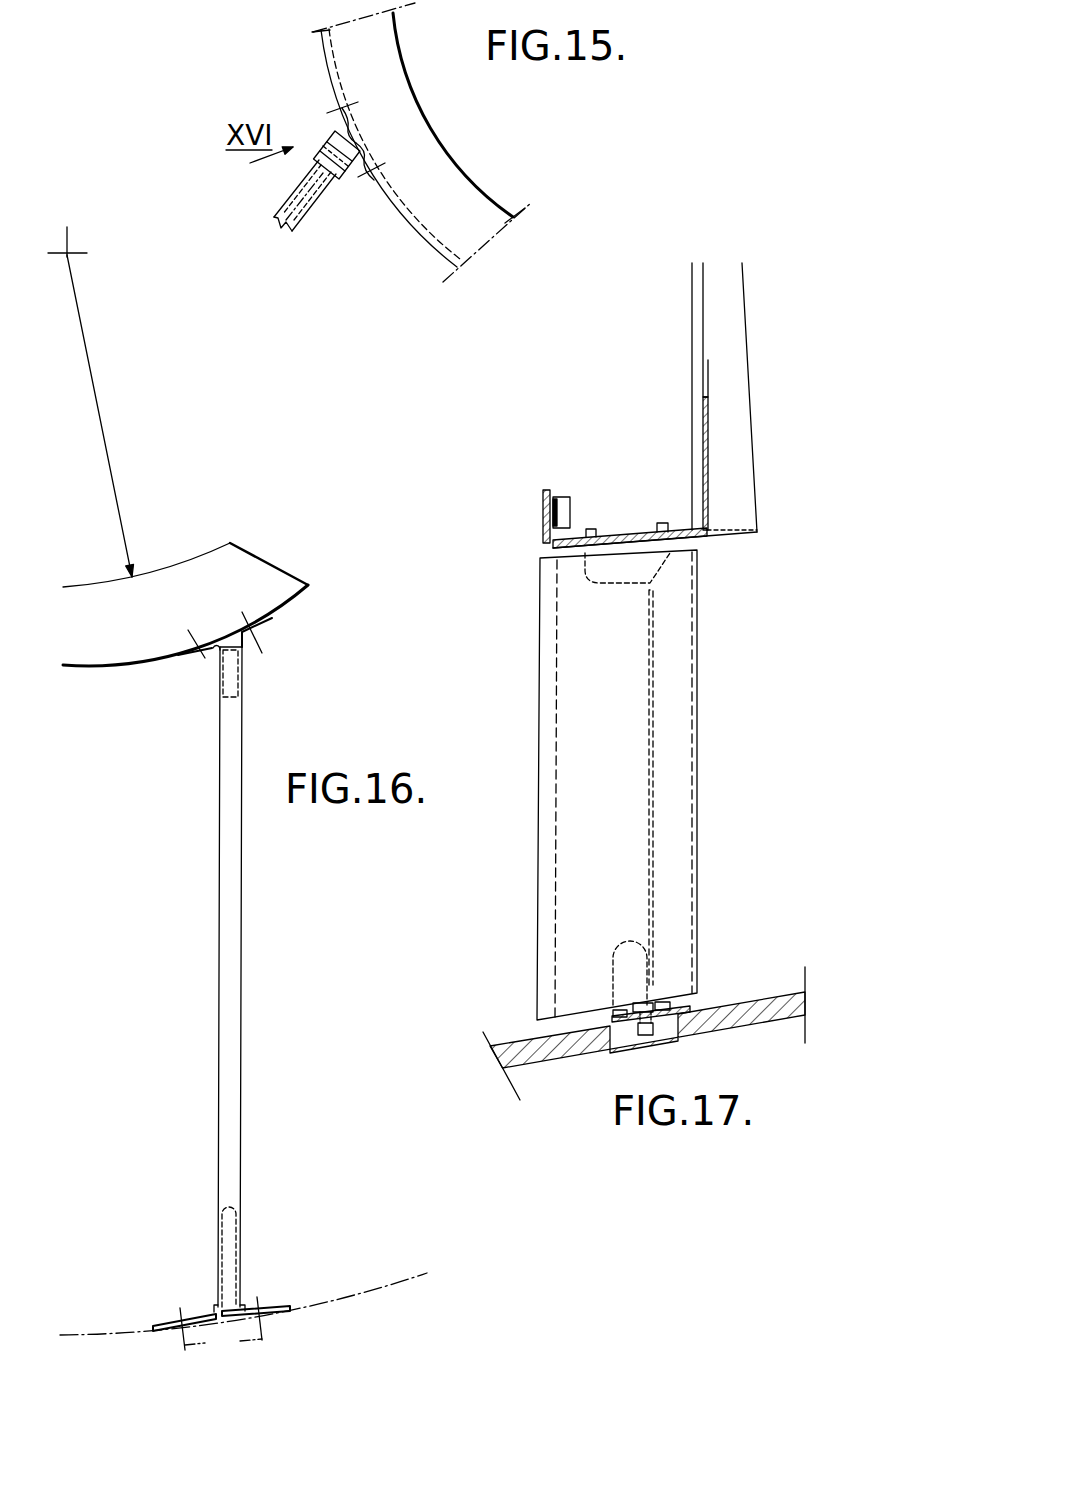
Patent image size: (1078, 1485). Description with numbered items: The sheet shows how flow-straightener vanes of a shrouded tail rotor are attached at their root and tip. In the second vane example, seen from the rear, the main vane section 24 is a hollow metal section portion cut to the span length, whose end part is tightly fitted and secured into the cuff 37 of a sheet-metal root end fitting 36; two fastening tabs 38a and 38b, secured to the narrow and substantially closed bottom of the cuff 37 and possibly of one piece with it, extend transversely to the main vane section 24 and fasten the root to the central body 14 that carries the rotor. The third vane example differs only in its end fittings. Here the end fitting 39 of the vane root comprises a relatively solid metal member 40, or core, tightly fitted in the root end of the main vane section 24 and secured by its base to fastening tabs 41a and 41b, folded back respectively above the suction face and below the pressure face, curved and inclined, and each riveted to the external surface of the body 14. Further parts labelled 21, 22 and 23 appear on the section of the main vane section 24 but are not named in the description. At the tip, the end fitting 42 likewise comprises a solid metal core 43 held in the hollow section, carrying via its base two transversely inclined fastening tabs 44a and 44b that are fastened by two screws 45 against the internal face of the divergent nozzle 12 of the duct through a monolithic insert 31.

In FIG. 17, the divergent nozzle 12 is at (528, 1057).
In FIG. 15, the central body 14 is at (387, 42).
In FIG. 16, the central body 14 is at (185, 604).
In FIG. 17, the central body 14 is at (573, 538).
In FIG. 17, the side wall of strut 21 is at (697, 693).
In FIG. 17, the side wall of strut 22 is at (550, 667).
In FIG. 17, the slot 23 is at (650, 766).
In FIG. 15, the main vane section 24 is at (290, 230).
In FIG. 16, the main vane section 24 is at (242, 927).
In FIG. 17, the main vane section 24 is at (624, 785).
In FIG. 17, the monolithic insert 31 is at (680, 1033).
In FIG. 15, the root end fitting 36 is at (333, 137).
In FIG. 15, the cuff 37 is at (340, 147).
In FIG. 15, the fastening tab 38a is at (375, 182).
In FIG. 15, the fastening tab 38b is at (337, 93).
In FIG. 16, the end fitting of the vane root 39 is at (216, 651).
In FIG. 16, the metal member (core) 40 is at (238, 688).
In FIG. 17, the metal member (core) 40 is at (677, 548).
In FIG. 16, the fastening tab 41a is at (262, 621).
In FIG. 17, the fastening tab 41a is at (625, 543).
In FIG. 16, the fastening tab 41b is at (182, 655).
In FIG. 16, the end fitting of the vane tip 42 is at (216, 1307).
In FIG. 16, the core 43 is at (235, 1227).
In FIG. 17, the core 43 is at (670, 1005).
In FIG. 16, the fastening tab 44a is at (280, 1307).
In FIG. 17, the fastening tab 44a is at (615, 1007).
In FIG. 16, the fastening tab 44b is at (165, 1325).
In FIG. 16, the screws 45 is at (221, 1332).
In FIG. 17, the screws 45 is at (647, 1003).